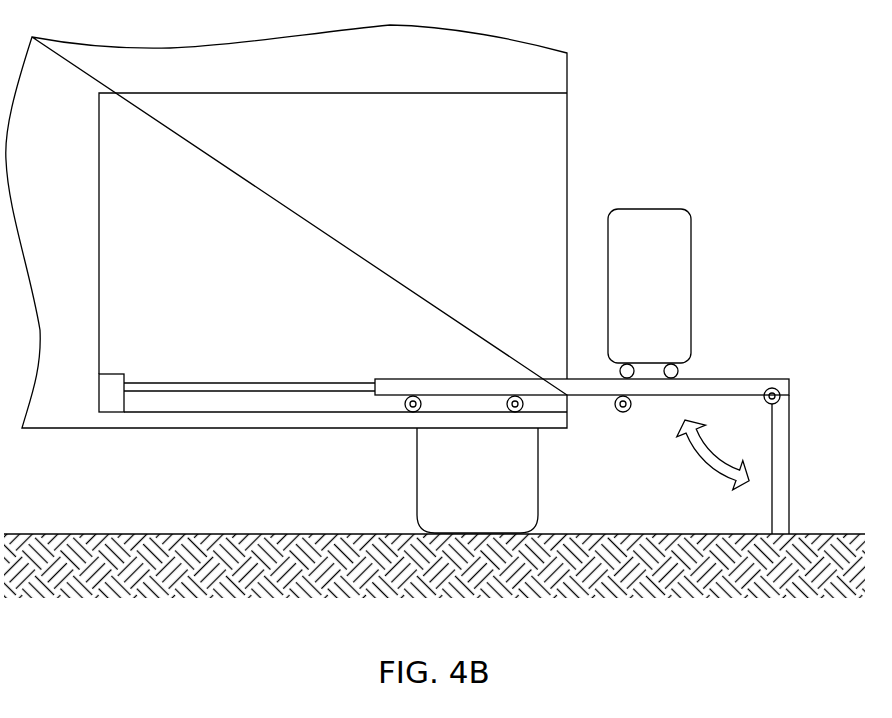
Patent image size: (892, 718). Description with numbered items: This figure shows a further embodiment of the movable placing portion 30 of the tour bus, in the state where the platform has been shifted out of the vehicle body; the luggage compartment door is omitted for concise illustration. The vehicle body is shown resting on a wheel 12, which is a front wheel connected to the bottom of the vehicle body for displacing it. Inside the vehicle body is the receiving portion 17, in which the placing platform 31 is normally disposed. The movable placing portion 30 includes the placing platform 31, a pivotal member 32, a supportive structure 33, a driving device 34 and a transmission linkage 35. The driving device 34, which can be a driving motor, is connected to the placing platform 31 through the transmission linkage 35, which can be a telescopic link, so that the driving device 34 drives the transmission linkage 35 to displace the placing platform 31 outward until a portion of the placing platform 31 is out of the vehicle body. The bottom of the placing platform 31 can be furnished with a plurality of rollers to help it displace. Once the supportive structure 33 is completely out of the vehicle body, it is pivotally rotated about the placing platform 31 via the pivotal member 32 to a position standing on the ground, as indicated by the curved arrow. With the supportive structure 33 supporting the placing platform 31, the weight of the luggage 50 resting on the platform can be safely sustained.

The wheel 12 is at (520, 489).
The receiving portion 17 is at (551, 127).
The movable placing portion 30 is at (621, 431).
The placing platform 31 is at (714, 380).
The pivotal member 32 is at (772, 388).
The supportive structure 33 is at (784, 475).
The driving device 34 is at (107, 392).
The transmission linkage 35 is at (265, 383).
The luggage 50 is at (650, 217).